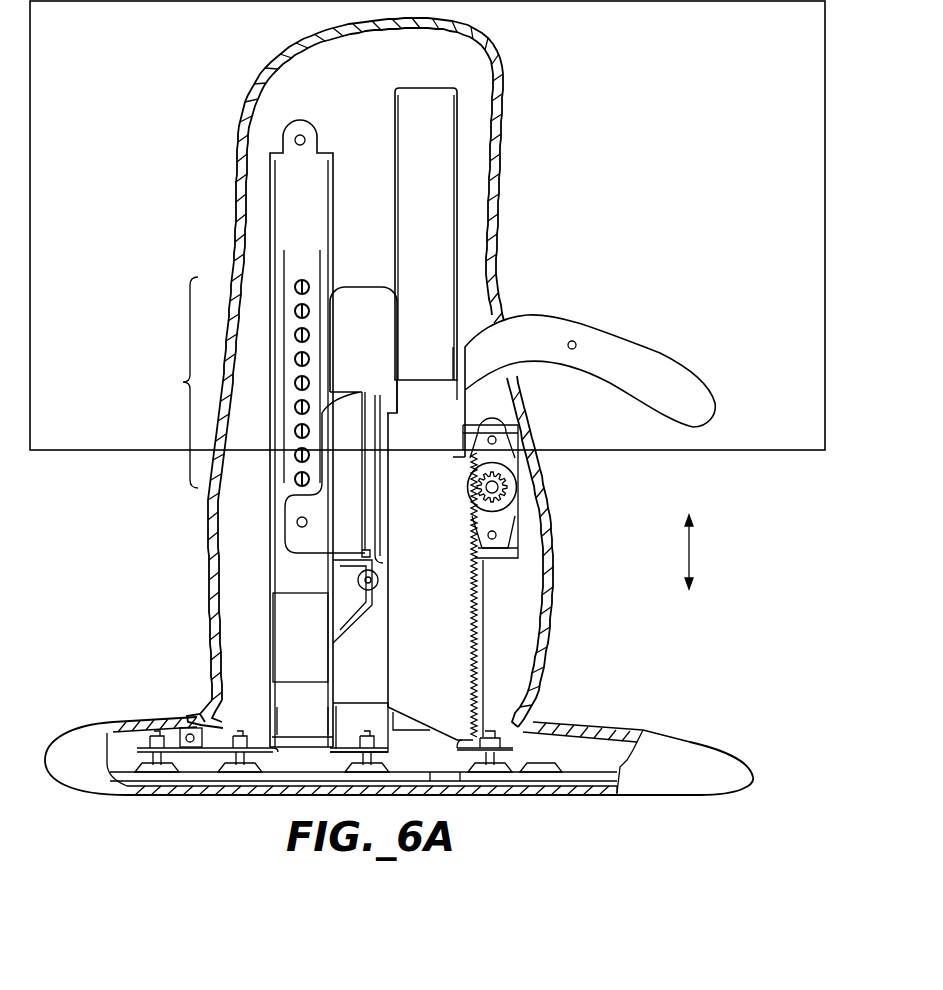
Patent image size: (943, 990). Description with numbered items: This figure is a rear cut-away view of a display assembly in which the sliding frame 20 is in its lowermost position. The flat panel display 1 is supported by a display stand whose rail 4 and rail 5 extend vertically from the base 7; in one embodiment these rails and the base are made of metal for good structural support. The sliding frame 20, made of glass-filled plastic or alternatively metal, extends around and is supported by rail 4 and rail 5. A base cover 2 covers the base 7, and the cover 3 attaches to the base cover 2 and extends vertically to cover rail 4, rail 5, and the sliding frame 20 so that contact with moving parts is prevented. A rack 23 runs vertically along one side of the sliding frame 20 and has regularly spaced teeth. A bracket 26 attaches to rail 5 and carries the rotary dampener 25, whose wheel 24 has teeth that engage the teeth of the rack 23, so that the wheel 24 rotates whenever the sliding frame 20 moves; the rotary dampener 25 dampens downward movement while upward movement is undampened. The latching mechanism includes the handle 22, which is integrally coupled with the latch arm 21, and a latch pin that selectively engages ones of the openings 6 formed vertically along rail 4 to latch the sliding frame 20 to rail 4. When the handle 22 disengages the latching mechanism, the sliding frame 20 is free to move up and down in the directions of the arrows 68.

The flat panel display 1 is at (778, 51).
The base cover 2 is at (710, 753).
The cover 3 is at (543, 673).
The rail 4 is at (298, 125).
The rail 5 is at (422, 97).
The openings 6 is at (233, 382).
The base 7 is at (550, 777).
The sliding frame 20 is at (432, 617).
The latch arm 21 is at (350, 517).
The handle 22 is at (645, 360).
The rack 23 is at (495, 618).
The wheel 24 is at (507, 490).
The rotary dampener 25 is at (505, 470).
The bracket 26 is at (494, 432).
The arrows 68 is at (692, 560).